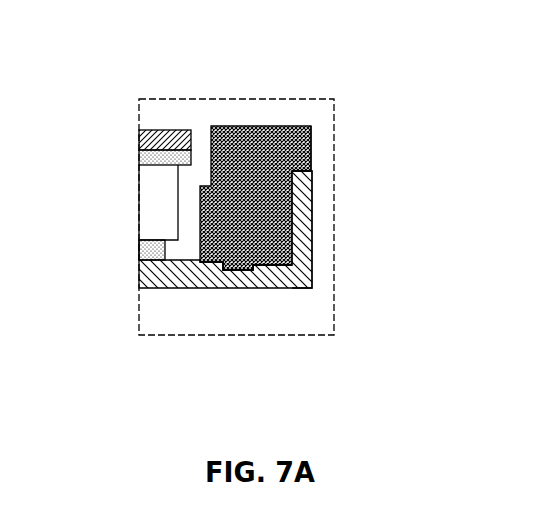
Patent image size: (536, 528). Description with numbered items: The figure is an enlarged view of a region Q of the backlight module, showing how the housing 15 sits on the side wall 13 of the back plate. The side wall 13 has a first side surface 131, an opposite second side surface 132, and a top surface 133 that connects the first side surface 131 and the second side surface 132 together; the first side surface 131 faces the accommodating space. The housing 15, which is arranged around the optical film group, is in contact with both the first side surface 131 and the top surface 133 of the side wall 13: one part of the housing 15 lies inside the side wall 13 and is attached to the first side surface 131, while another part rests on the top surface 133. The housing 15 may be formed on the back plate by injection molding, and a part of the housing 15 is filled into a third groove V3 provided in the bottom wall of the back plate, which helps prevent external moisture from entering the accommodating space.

The side wall of the back plate 13 is at (283, 269).
The first side surface 131 is at (289, 232).
The second side surface 132 is at (313, 202).
The top surface 133 is at (312, 150).
The housing 15 is at (277, 140).
The third groove V3 is at (248, 267).
The region Q is at (167, 333).